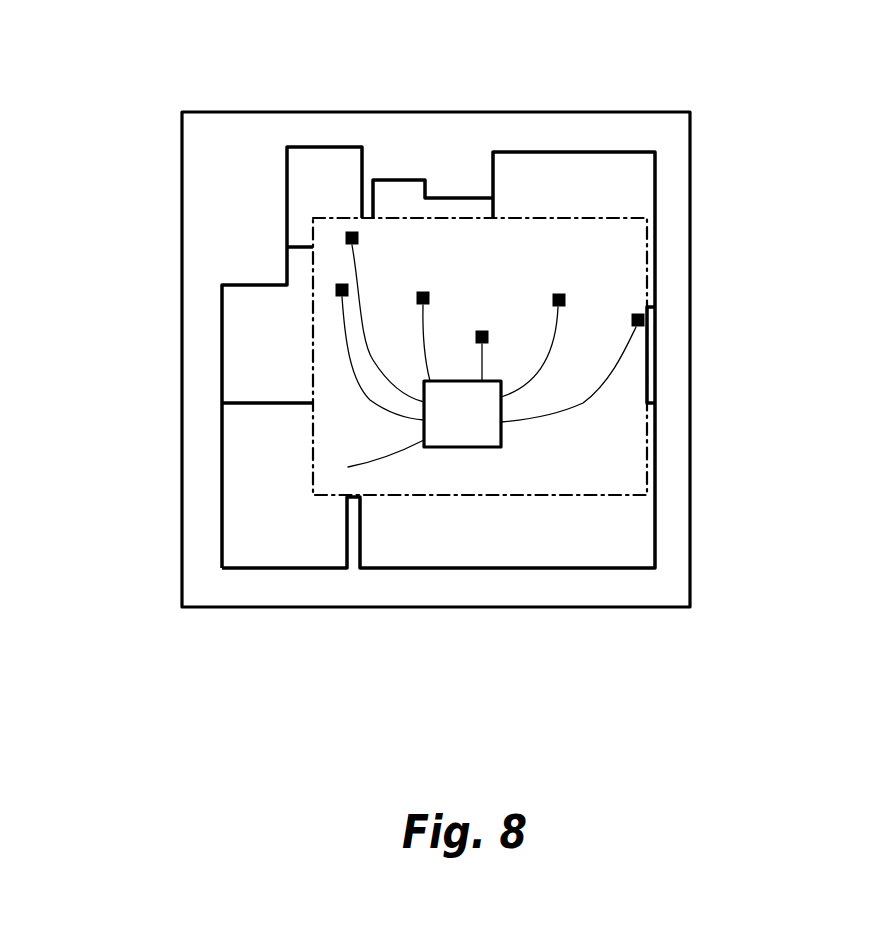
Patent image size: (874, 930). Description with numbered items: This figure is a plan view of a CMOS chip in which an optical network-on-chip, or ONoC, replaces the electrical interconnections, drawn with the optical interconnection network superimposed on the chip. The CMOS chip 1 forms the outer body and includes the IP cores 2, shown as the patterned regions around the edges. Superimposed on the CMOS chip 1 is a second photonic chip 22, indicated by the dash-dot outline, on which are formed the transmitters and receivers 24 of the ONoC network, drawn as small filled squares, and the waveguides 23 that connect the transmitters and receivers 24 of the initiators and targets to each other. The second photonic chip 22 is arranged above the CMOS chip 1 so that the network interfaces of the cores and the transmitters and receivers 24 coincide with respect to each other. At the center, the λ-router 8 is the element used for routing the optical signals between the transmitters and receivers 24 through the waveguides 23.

The CMOS chip 1 is at (463, 112).
The IP cores 2 is at (313, 192).
The λ-router 8 is at (472, 415).
The second photonic chip 22 is at (605, 218).
The waveguides 23 is at (582, 400).
The transmitters and receivers 24 is at (348, 283).